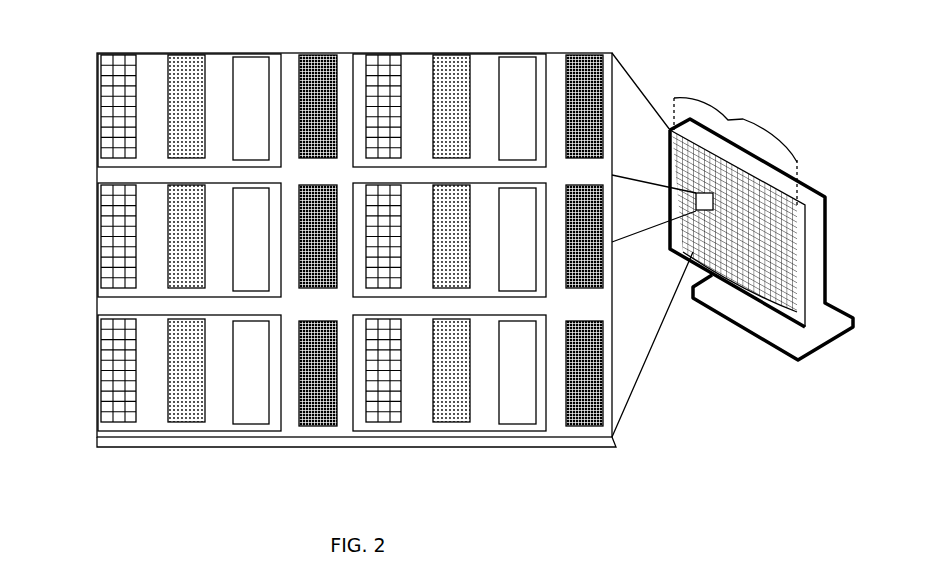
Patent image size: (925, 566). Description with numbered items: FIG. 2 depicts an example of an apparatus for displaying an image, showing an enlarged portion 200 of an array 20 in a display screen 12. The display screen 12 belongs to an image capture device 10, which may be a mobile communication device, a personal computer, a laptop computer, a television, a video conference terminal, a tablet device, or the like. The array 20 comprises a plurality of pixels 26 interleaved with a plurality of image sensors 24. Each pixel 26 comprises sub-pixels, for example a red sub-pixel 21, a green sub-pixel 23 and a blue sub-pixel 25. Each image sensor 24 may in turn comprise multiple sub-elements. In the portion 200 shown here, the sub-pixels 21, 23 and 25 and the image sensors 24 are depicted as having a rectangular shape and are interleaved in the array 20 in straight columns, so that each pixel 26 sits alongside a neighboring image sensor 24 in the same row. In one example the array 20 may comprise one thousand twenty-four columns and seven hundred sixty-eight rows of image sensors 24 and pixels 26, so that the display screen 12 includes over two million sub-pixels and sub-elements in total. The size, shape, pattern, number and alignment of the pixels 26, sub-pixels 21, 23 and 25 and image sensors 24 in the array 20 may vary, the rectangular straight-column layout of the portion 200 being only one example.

The portion of array 200 is at (82, 82).
The red sub-pixel 21 is at (107, 84).
The green sub-pixel 23 is at (176, 84).
The image sensor 24 is at (308, 84).
The blue sub-pixel 25 is at (240, 84).
The pixel 26 is at (142, 124).
The array 20 is at (735, 151).
The image capture device 10 is at (815, 183).
The display screen 12 is at (805, 206).